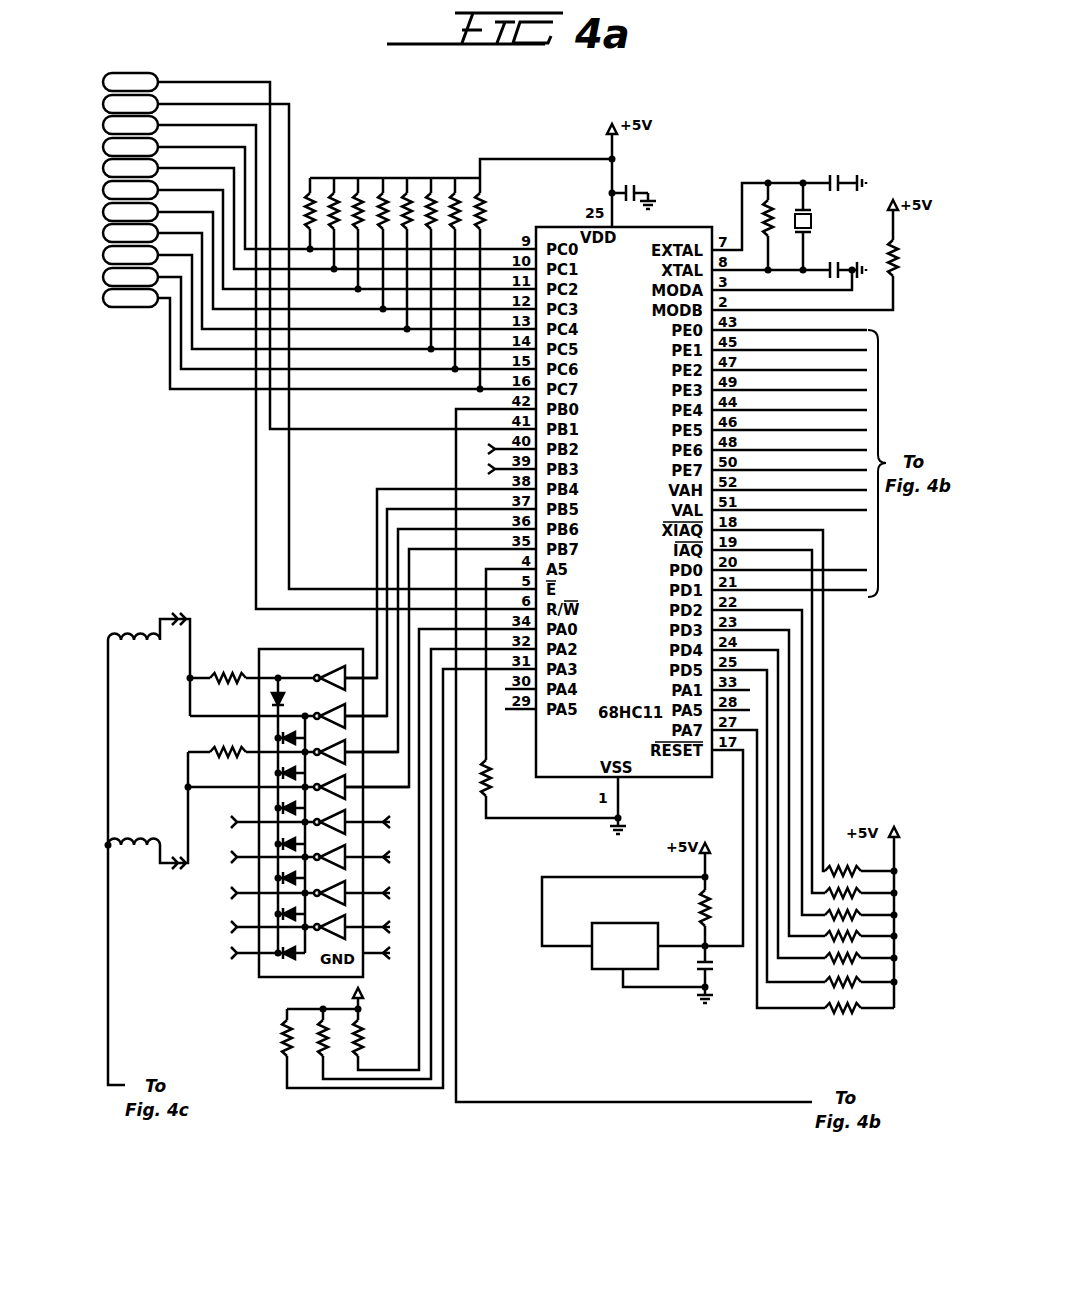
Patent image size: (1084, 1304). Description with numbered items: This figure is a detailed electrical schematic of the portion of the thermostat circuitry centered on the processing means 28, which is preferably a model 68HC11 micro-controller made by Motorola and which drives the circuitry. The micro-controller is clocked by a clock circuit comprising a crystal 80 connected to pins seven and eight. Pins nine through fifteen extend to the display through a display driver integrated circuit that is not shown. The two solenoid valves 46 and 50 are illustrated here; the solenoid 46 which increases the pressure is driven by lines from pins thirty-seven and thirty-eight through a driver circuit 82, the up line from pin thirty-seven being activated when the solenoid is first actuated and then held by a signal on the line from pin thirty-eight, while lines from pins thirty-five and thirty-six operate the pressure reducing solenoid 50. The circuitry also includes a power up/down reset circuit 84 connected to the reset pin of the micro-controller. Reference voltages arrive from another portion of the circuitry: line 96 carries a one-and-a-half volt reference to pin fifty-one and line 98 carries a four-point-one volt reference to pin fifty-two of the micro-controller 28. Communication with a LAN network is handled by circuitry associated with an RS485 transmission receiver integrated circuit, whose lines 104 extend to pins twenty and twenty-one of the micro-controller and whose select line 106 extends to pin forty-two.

The processing means 28 is at (562, 227).
The crystal 80 is at (811, 221).
The line 98 is at (815, 493).
The line 96 is at (863, 530).
The lines 104 is at (838, 597).
The select line 106 is at (672, 1102).
The solenoid valve 46 is at (135, 640).
The pressure reducing solenoid 50 is at (133, 845).
The driver circuit 82 is at (272, 983).
The power up/down reset circuit 84 is at (598, 974).